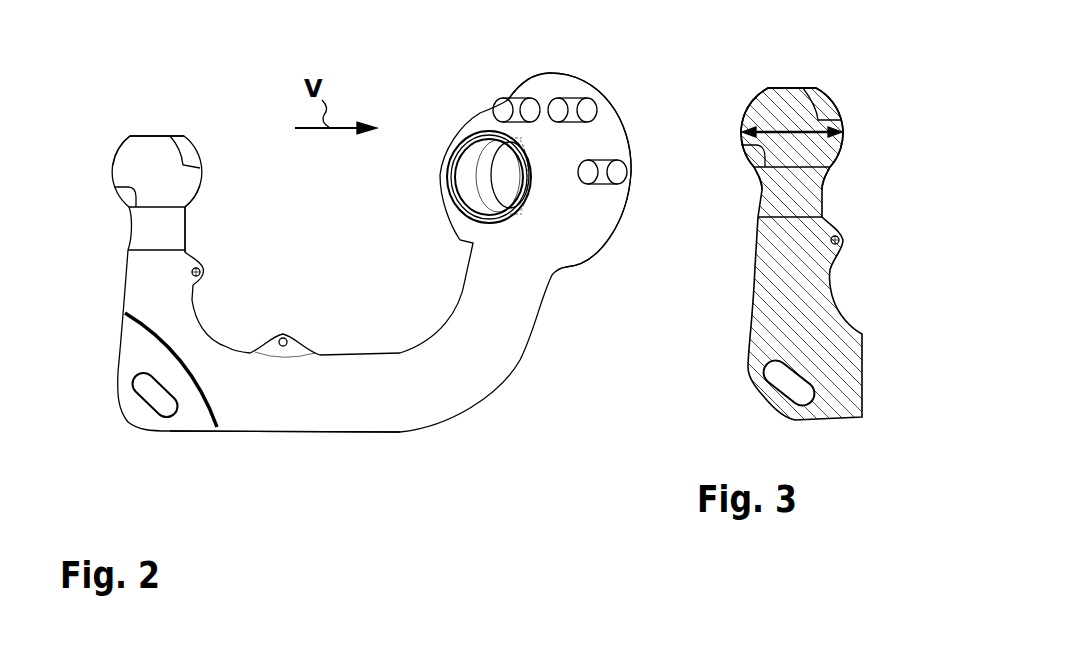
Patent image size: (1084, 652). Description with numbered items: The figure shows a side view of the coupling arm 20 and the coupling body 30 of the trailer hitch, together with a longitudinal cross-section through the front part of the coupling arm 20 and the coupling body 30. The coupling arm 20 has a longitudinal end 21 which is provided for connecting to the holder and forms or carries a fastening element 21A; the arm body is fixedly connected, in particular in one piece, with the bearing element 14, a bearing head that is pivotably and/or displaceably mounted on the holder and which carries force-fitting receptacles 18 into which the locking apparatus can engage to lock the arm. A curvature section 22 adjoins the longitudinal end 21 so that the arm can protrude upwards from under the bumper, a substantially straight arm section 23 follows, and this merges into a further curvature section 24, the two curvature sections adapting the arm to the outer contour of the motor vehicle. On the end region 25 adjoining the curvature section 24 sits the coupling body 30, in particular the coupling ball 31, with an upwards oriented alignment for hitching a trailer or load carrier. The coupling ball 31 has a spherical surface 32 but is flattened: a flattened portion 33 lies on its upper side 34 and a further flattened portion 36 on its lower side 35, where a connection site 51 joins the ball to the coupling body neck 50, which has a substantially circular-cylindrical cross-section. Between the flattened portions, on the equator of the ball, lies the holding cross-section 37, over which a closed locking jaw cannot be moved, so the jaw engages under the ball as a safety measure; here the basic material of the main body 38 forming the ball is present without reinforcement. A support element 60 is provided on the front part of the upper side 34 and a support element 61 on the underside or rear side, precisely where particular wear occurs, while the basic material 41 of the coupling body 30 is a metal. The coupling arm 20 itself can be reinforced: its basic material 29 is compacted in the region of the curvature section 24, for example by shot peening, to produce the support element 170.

In FIG. 2, the bearing element 14 is at (527, 87).
In FIG. 2, the force-fitting receptacles 18 is at (503, 112).
In FIG. 2, the coupling arm 20 is at (463, 419).
In FIG. 3, the coupling arm 20 is at (825, 432).
In FIG. 2, the longitudinal end 21 is at (532, 293).
In FIG. 2, the fastening element 21A is at (607, 242).
In FIG. 2, the curvature section 22 is at (487, 368).
In FIG. 2, the arm section 23 is at (323, 425).
In FIG. 2, the curvature section 24 is at (140, 362).
In FIG. 2, the end region 25 is at (135, 270).
In FIG. 3, the end region 25 is at (760, 240).
In FIG. 2, the basic material 29 is at (353, 380).
In FIG. 2, the coupling body 30 is at (145, 120).
In FIG. 3, the coupling body 30 is at (757, 80).
In FIG. 2, the coupling ball 31 is at (132, 150).
In FIG. 3, the coupling ball 31 is at (758, 102).
In FIG. 2, the spherical surface 32 is at (197, 187).
In FIG. 2, the flattened portion 33 is at (158, 132).
In FIG. 3, the upper side 34 is at (787, 90).
In FIG. 2, the lower side 35 is at (167, 195).
In FIG. 3, the flattened portion 36 is at (755, 168).
In FIG. 3, the holding cross-section 37 is at (777, 123).
In FIG. 3, the main body 38 is at (823, 148).
In FIG. 3, the basic material 41 is at (777, 100).
In FIG. 2, the coupling body neck 50 is at (140, 232).
In FIG. 3, the connection site 51 is at (823, 170).
In FIG. 2, the support element 60 is at (183, 155).
In FIG. 3, the support element 60 is at (840, 110).
In FIG. 2, the support element 61 is at (123, 193).
In FIG. 3, the support element 61 is at (747, 150).
In FIG. 2, the support element 170 is at (193, 415).